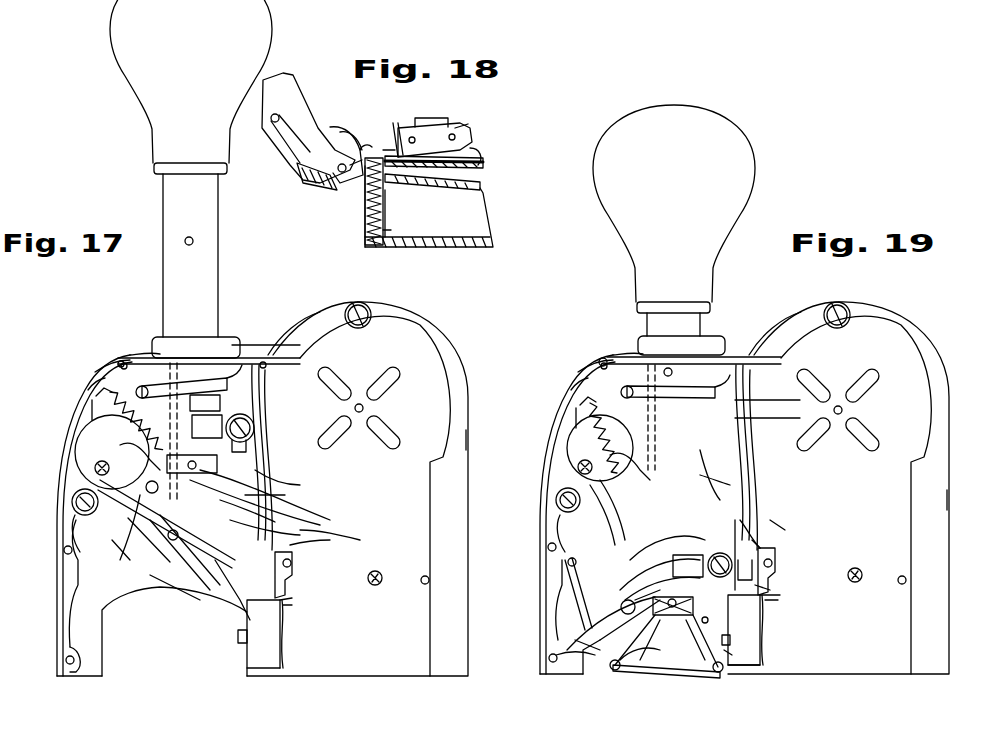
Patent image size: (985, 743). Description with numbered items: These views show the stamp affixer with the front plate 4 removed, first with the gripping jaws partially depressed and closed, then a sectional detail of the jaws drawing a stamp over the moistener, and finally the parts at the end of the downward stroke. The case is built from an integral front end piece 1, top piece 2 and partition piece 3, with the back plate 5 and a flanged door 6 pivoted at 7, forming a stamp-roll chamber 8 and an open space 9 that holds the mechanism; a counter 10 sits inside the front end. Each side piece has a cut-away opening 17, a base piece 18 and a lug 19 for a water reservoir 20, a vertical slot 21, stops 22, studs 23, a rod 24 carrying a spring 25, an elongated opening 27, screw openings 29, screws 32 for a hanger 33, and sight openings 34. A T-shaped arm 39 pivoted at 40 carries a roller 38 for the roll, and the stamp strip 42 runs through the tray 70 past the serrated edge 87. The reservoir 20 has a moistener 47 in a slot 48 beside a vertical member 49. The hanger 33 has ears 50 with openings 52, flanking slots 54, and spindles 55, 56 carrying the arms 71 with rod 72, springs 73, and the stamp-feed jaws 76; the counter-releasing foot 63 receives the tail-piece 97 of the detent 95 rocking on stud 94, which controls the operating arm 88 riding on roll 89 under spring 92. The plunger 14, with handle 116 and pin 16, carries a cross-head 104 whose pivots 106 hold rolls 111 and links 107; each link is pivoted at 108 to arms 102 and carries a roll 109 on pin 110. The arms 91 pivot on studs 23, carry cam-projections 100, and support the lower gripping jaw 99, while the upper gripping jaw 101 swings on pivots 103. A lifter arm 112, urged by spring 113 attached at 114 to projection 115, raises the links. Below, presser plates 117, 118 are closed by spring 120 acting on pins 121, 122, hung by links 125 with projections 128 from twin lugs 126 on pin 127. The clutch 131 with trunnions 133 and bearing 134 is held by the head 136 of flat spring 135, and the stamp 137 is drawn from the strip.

In FIG. 17, the front end piece 1 is at (57, 572).
In FIG. 19, the front end piece 1 is at (540, 578).
In FIG. 17, the top piece 2 is at (244, 358).
In FIG. 19, the top piece 2 is at (715, 360).
In FIG. 17, the partition piece 3 is at (262, 450).
In FIG. 19, the partition piece 3 is at (746, 452).
In FIG. 17, the front plate 4 is at (343, 525).
In FIG. 19, the front plate 4 is at (813, 532).
In FIG. 17, the back plate 5 is at (130, 555).
In FIG. 19, the back plate 5 is at (727, 544).
In FIG. 17, the flanged door 6 is at (467, 440).
In FIG. 19, the flanged door 6 is at (948, 502).
In FIG. 17, the door pivot screws 7 is at (358, 303).
In FIG. 19, the door pivot screws 7 is at (838, 303).
In FIG. 17, the stamp-roll chamber 8 is at (296, 336).
In FIG. 19, the stamp-roll chamber 8 is at (784, 336).
In FIG. 17, the open space 9 is at (78, 592).
In FIG. 19, the open space 9 is at (560, 590).
In FIG. 17, the counter 10 is at (85, 450).
In FIG. 19, the counter 10 is at (570, 447).
In FIG. 17, the plunger 14 is at (218, 262).
In FIG. 19, the plunger 14 is at (647, 322).
In FIG. 17, the pin 16 is at (194, 241).
In FIG. 17, the cut-away opening 17 is at (105, 613).
In FIG. 17, the base piece 18 is at (265, 676).
In FIG. 19, the base piece 18 is at (750, 674).
In FIG. 17, the lug 19 is at (238, 640).
In FIG. 19, the lug 19 is at (730, 641).
In FIG. 17, the water reservoir 20 is at (296, 615).
In FIG. 18, the water reservoir 20 is at (429, 217).
In FIG. 19, the water reservoir 20 is at (783, 612).
In FIG. 17, the vertical slot 21 is at (268, 460).
In FIG. 19, the vertical slot 21 is at (752, 462).
In FIG. 17, the pins or stops 22 is at (172, 541).
In FIG. 17, the studs 23 is at (95, 468).
In FIG. 19, the studs 23 is at (578, 467).
In FIG. 17, the rod 24 is at (72, 502).
In FIG. 19, the rod 24 is at (556, 500).
In FIG. 17, the spring 25 is at (78, 524).
In FIG. 19, the spring 25 is at (560, 526).
In FIG. 17, the elongated opening 27 is at (142, 385).
In FIG. 19, the elongated opening 27 is at (621, 390).
In FIG. 17, the openings 29 is at (121, 364).
In FIG. 19, the openings 29 is at (604, 362).
In FIG. 17, the screws 32 is at (372, 582).
In FIG. 19, the screws 32 is at (854, 583).
In FIG. 18, the hanger 33 is at (472, 135).
In FIG. 17, the sight openings 34 is at (340, 428).
In FIG. 19, the sight openings 34 is at (820, 392).
In FIG. 17, the roller 38 is at (340, 392).
In FIG. 19, the roller 38 is at (858, 400).
In FIG. 17, the T-shaped arm 39 is at (352, 408).
In FIG. 19, the T-shaped arm 39 is at (832, 410).
In FIG. 17, the pivot 40 is at (424, 585).
In FIG. 19, the pivot 40 is at (906, 582).
In FIG. 18, the stamp strip 42 is at (490, 162).
In FIG. 17, the moistener 47 is at (297, 620).
In FIG. 18, the moistener 47 is at (386, 232).
In FIG. 19, the moistener 47 is at (790, 620).
In FIG. 18, the slot 48 is at (386, 200).
In FIG. 18, the vertical member 49 is at (414, 213).
In FIG. 17, the overhanging ears 50 is at (290, 578).
In FIG. 18, the overhanging ears 50 is at (385, 150).
In FIG. 19, the overhanging ears 50 is at (772, 575).
In FIG. 17, the openings 52 is at (292, 563).
In FIG. 19, the openings 52 is at (773, 563).
In FIG. 18, the flanking slots 54 is at (472, 148).
In FIG. 18, the spindle 55 is at (456, 128).
In FIG. 18, the spindle 56 is at (435, 135).
In FIG. 17, the counter-releasing foot 63 is at (330, 540).
In FIG. 19, the counter-releasing foot 63 is at (760, 548).
In FIG. 17, the tray 70 is at (292, 607).
In FIG. 18, the tray 70 is at (482, 184).
In FIG. 19, the tray 70 is at (780, 605).
In FIG. 18, the arms 71 is at (396, 128).
In FIG. 19, the arms 71 is at (762, 555).
In FIG. 18, the rod 72 is at (367, 150).
In FIG. 19, the rod 72 is at (775, 592).
In FIG. 18, the springs 73 is at (420, 120).
In FIG. 19, the stamp-feed jaws 76 is at (669, 368).
In FIG. 18, the serrated edge 87 is at (375, 155).
In FIG. 17, the operating arm 88 is at (140, 455).
In FIG. 19, the operating arm 88 is at (640, 465).
In FIG. 17, the roll 89 is at (105, 548).
In FIG. 19, the roll 89 is at (618, 505).
In FIG. 17, the arms 91 is at (125, 500).
In FIG. 18, the arms 91 is at (288, 85).
In FIG. 19, the arms 91 is at (575, 615).
In FIG. 17, the spring 92 is at (94, 398).
In FIG. 19, the spring 92 is at (578, 410).
In FIG. 17, the fixed stud 94 is at (172, 345).
In FIG. 19, the fixed stud 94 is at (660, 345).
In FIG. 17, the detent 95 is at (105, 368).
In FIG. 19, the detent 95 is at (627, 380).
In FIG. 17, the tail-piece 97 is at (300, 535).
In FIG. 19, the tail-piece 97 is at (712, 458).
In FIG. 17, the lower gripping jaw 99 is at (240, 600).
In FIG. 18, the lower gripping jaw 99 is at (340, 183).
In FIG. 19, the lower gripping jaw 99 is at (556, 657).
In FIG. 17, the cam-projection 100 is at (275, 522).
In FIG. 18, the cam-projection 100 is at (350, 122).
In FIG. 19, the cam-projection 100 is at (625, 630).
In FIG. 18, the upper gripping jaw 101 is at (300, 180).
In FIG. 18, the arms 102 is at (290, 135).
In FIG. 17, the pivot 103 is at (150, 575).
In FIG. 18, the pivot 103 is at (272, 120).
In FIG. 19, the pivot 103 is at (567, 563).
In FIG. 17, the cross-head 104 is at (207, 426).
In FIG. 19, the cross-head 104 is at (688, 566).
In FIG. 17, the pivots 106 is at (252, 422).
In FIG. 19, the pivots 106 is at (720, 553).
In FIG. 17, the links 107 is at (300, 485).
In FIG. 19, the links 107 is at (648, 596).
In FIG. 19, the pivot 108 is at (593, 663).
In FIG. 17, the roll 109 is at (294, 495).
In FIG. 19, the roll 109 is at (660, 560).
In FIG. 17, the pin 110 is at (295, 513).
In FIG. 19, the pin 110 is at (670, 560).
In FIG. 17, the rolls 111 is at (257, 432).
In FIG. 19, the rolls 111 is at (740, 560).
In FIG. 17, the lifter arm 112 is at (120, 548).
In FIG. 19, the lifter arm 112 is at (580, 635).
In FIG. 17, the spring 113 is at (108, 392).
In FIG. 19, the spring 113 is at (588, 400).
In FIG. 17, the attachment point 114 is at (100, 380).
In FIG. 19, the attachment point 114 is at (583, 380).
In FIG. 19, the projection 115 is at (640, 555).
In FIG. 17, the handle 116 is at (191, 87).
In FIG. 19, the handle 116 is at (674, 209).
In FIG. 17, the presser plate 117 is at (165, 530).
In FIG. 19, the presser plate 117 is at (660, 675).
In FIG. 19, the presser plate 118 is at (705, 675).
In FIG. 19, the spring 120 is at (648, 675).
In FIG. 19, the pin 121 is at (635, 650).
In FIG. 19, the pin 122 is at (720, 675).
In FIG. 19, the links 125 is at (672, 641).
In FIG. 19, the twin lugs 126 is at (742, 658).
In FIG. 17, the pin 127 is at (205, 403).
In FIG. 19, the pin 127 is at (673, 622).
In FIG. 19, the beak-like projections 128 is at (640, 660).
In FIG. 17, the clutch 131 is at (178, 395).
In FIG. 19, the clutch 131 is at (660, 408).
In FIG. 17, the trunnions 133 is at (150, 350).
In FIG. 19, the trunnions 133 is at (625, 365).
In FIG. 17, the double bearing 134 is at (240, 345).
In FIG. 19, the double bearing 134 is at (767, 410).
In FIG. 17, the flat spring 135 is at (285, 495).
In FIG. 19, the flat spring 135 is at (730, 468).
In FIG. 17, the angular head 136 is at (270, 350).
In FIG. 19, the angular head 136 is at (735, 352).
In FIG. 18, the stamp 137 is at (360, 178).